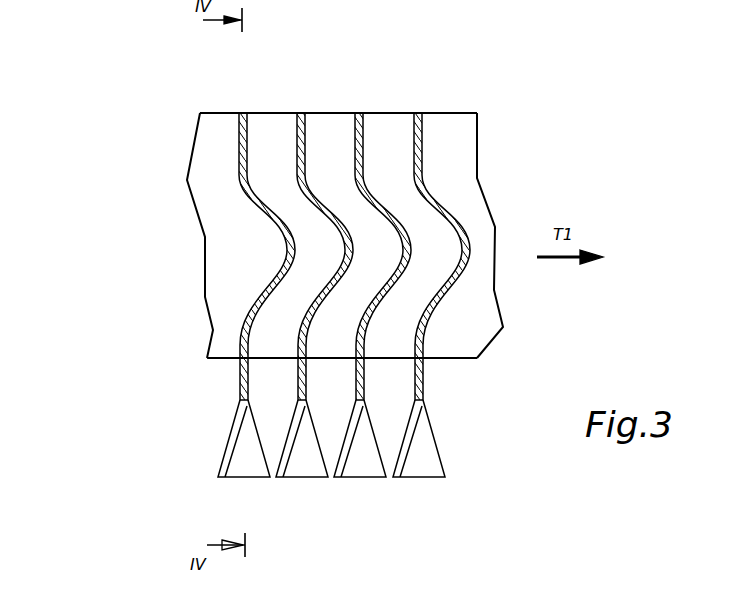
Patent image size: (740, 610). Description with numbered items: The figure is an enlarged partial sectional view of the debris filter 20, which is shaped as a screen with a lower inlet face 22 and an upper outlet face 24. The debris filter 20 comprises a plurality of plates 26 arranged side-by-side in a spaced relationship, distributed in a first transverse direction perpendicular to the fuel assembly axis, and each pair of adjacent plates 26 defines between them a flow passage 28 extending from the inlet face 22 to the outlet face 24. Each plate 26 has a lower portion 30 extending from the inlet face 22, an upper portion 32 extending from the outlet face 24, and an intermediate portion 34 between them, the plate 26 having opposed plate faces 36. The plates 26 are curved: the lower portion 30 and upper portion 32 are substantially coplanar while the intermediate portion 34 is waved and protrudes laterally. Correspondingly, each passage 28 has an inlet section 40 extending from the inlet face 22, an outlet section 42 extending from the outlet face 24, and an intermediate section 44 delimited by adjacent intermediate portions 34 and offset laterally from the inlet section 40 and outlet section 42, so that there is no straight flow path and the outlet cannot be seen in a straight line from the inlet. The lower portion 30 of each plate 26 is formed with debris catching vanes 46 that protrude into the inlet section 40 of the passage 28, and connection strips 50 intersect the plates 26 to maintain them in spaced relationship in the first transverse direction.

The debris filter 20 is at (160, 89).
The lower inlet face 22 is at (208, 485).
The upper outlet face 24 is at (231, 91).
The plates 26 is at (363, 143).
The flow passages 28 is at (277, 106).
The lower portion 30 is at (238, 377).
The upper portion 32 is at (239, 143).
The intermediate portion 34 is at (288, 253).
The plate faces 36 is at (266, 348).
The inlet section 40 is at (282, 378).
The outlet section 42 is at (267, 167).
The intermediate section 44 is at (290, 287).
The debris catching vanes 46 is at (248, 453).
The connection strips 50 is at (466, 340).